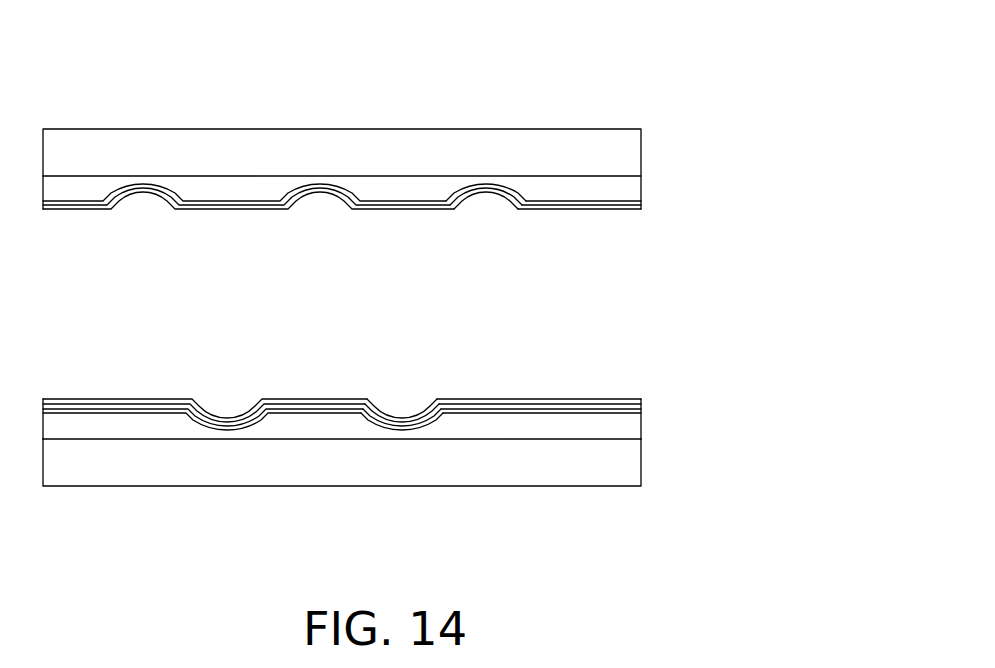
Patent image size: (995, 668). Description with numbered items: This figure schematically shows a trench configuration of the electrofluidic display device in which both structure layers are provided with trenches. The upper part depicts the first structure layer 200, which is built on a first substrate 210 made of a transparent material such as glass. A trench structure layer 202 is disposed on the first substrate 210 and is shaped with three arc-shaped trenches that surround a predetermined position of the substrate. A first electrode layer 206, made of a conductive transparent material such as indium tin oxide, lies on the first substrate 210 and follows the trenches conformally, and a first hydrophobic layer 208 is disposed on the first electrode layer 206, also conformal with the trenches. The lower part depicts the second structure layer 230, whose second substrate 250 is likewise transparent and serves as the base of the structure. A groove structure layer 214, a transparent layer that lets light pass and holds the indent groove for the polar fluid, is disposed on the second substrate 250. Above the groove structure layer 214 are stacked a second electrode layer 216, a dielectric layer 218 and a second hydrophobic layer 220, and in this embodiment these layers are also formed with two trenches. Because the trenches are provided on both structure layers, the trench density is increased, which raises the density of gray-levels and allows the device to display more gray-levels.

The first structure layer 200 is at (608, 105).
The first substrate 210 is at (627, 147).
The trench structure layer 202 is at (627, 182).
The first electrode layer 206 is at (627, 203).
The first hydrophobic layer 208 is at (642, 210).
The second structure layer 230 is at (607, 500).
The second hydrophobic layer 220 is at (641, 401).
The dielectric layer 218 is at (641, 405).
The second electrode layer 216 is at (641, 410).
The groove structure layer 214 is at (633, 430).
The second substrate 250 is at (633, 462).